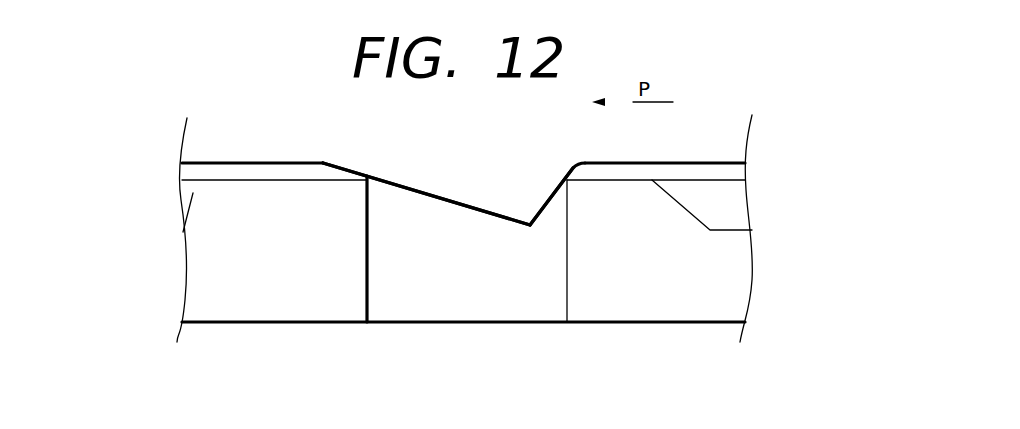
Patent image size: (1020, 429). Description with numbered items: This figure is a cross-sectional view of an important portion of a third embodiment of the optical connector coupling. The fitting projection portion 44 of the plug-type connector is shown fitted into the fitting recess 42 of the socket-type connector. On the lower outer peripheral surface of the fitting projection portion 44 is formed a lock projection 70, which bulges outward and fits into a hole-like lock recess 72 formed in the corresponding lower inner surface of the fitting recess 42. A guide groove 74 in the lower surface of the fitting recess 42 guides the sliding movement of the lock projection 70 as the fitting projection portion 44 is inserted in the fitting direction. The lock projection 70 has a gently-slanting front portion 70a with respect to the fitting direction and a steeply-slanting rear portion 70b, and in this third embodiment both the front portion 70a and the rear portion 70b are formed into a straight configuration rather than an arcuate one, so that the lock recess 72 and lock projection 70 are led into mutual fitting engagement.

The fitting recess 42 is at (173, 235).
The fitting projection portion 44 is at (213, 175).
The lock projection 70 is at (493, 220).
The front portion 70a is at (442, 205).
The rear portion 70b is at (545, 217).
The lock recess 72 is at (378, 292).
The guide groove 74 is at (740, 226).